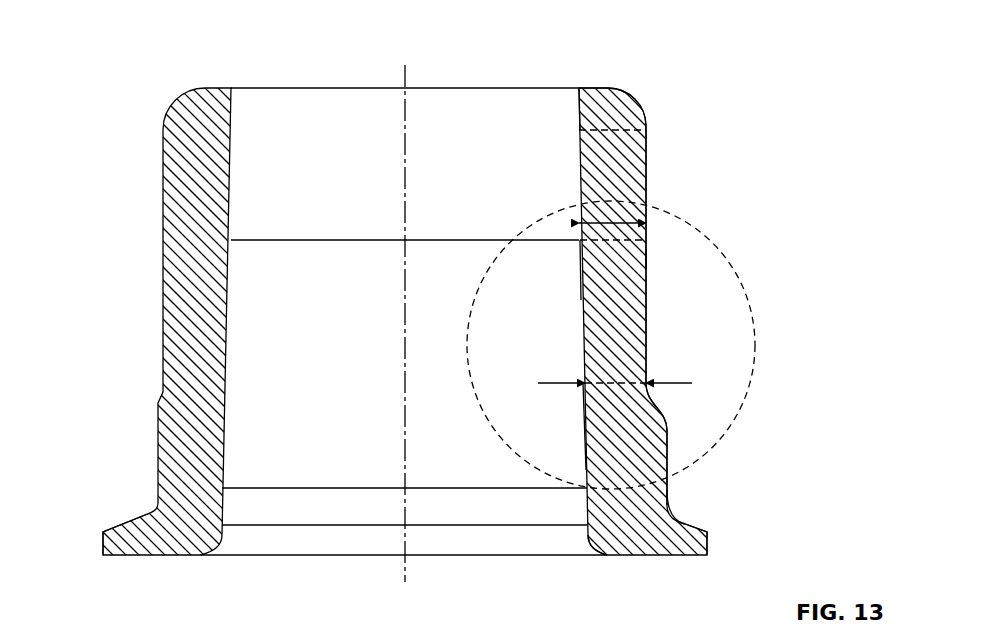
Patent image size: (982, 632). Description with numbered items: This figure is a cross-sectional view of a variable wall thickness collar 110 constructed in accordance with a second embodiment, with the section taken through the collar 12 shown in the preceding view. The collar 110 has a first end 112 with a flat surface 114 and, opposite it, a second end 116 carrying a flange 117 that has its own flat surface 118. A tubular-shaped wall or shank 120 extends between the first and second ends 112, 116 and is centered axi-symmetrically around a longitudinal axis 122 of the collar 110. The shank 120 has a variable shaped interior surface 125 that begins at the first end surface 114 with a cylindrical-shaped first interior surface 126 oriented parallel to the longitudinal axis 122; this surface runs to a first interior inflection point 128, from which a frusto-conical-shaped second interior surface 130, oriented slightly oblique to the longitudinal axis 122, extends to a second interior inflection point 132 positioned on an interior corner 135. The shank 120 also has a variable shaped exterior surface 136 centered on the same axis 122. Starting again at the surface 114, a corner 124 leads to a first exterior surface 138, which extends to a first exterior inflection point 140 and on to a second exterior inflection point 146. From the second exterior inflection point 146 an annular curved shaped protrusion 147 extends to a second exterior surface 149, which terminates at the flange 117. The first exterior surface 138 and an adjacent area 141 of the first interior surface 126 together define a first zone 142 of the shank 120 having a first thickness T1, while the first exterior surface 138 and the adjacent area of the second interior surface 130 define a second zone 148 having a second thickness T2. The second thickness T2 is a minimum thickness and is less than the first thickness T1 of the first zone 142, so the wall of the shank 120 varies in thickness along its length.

The variable wall thickness collar 110 is at (128, 88).
The first end 112 is at (553, 85).
The flat surface 114 is at (582, 88).
The second end 116 is at (270, 572).
The flange 117 is at (712, 543).
The flat surface 118 is at (680, 555).
The shank 120 is at (650, 250).
The longitudinal axis 122 is at (405, 80).
The corner 124 is at (640, 106).
The interior surface 125 is at (579, 258).
The first interior surface 126 is at (579, 115).
The first interior inflection point 128 is at (579, 235).
The second interior surface 130 is at (585, 440).
The second interior inflection point 132 is at (587, 528).
The interior corner 135 is at (595, 545).
The exterior surface 136 is at (697, 258).
The first exterior surface 138 is at (646, 160).
The first exterior inflection point 140 is at (648, 380).
The adjacent area 141 is at (580, 152).
The first zone 142 is at (613, 196).
The second exterior inflection point 146 is at (660, 407).
The annular curved shaped protrusion 147 is at (668, 422).
The second zone 148 is at (615, 345).
The second exterior surface 149 is at (670, 498).
The detail circle 12 is at (755, 318).
The first thickness T1 is at (579, 190).
The second thickness T2 is at (583, 382).